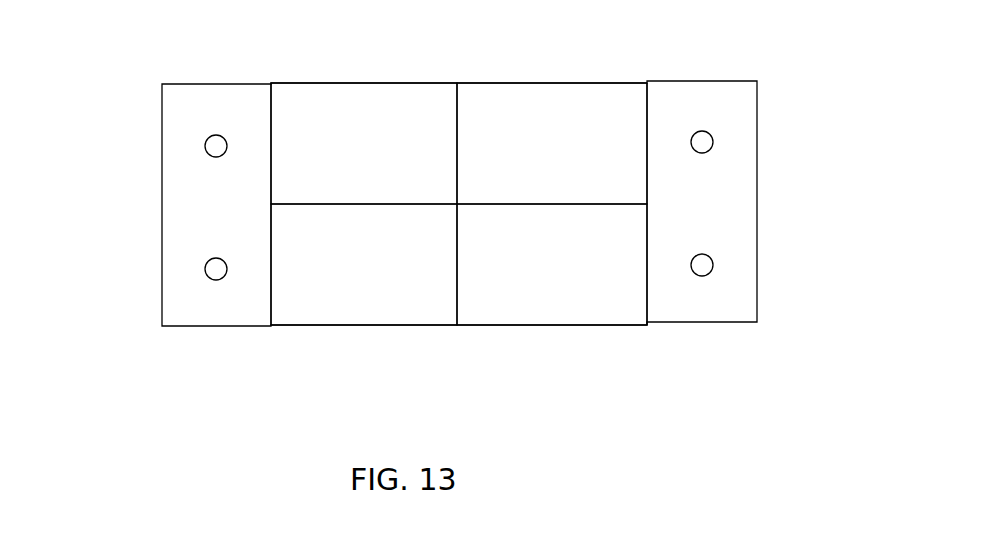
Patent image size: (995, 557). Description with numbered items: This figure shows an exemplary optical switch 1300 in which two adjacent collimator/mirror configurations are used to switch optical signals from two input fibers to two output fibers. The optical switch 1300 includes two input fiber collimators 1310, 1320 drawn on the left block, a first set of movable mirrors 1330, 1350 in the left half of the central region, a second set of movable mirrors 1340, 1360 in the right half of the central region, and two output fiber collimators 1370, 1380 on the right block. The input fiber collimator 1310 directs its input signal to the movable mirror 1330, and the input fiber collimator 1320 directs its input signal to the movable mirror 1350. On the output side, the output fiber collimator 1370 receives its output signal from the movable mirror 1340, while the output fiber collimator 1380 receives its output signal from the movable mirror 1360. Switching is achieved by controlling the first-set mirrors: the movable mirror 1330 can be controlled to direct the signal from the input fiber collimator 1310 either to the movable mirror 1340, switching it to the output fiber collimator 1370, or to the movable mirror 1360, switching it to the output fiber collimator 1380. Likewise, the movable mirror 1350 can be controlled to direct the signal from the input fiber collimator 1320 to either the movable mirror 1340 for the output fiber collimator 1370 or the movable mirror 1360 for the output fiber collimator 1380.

The optical switch 1300 is at (578, 494).
The input fiber collimator 1310 is at (154, 150).
The input fiber collimator 1320 is at (155, 274).
The movable mirror 1330 is at (349, 67).
The movable mirror 1340 is at (532, 67).
The movable mirror 1350 is at (353, 331).
The movable mirror 1360 is at (541, 333).
The output fiber collimator 1370 is at (763, 145).
The output fiber collimator 1380 is at (763, 262).